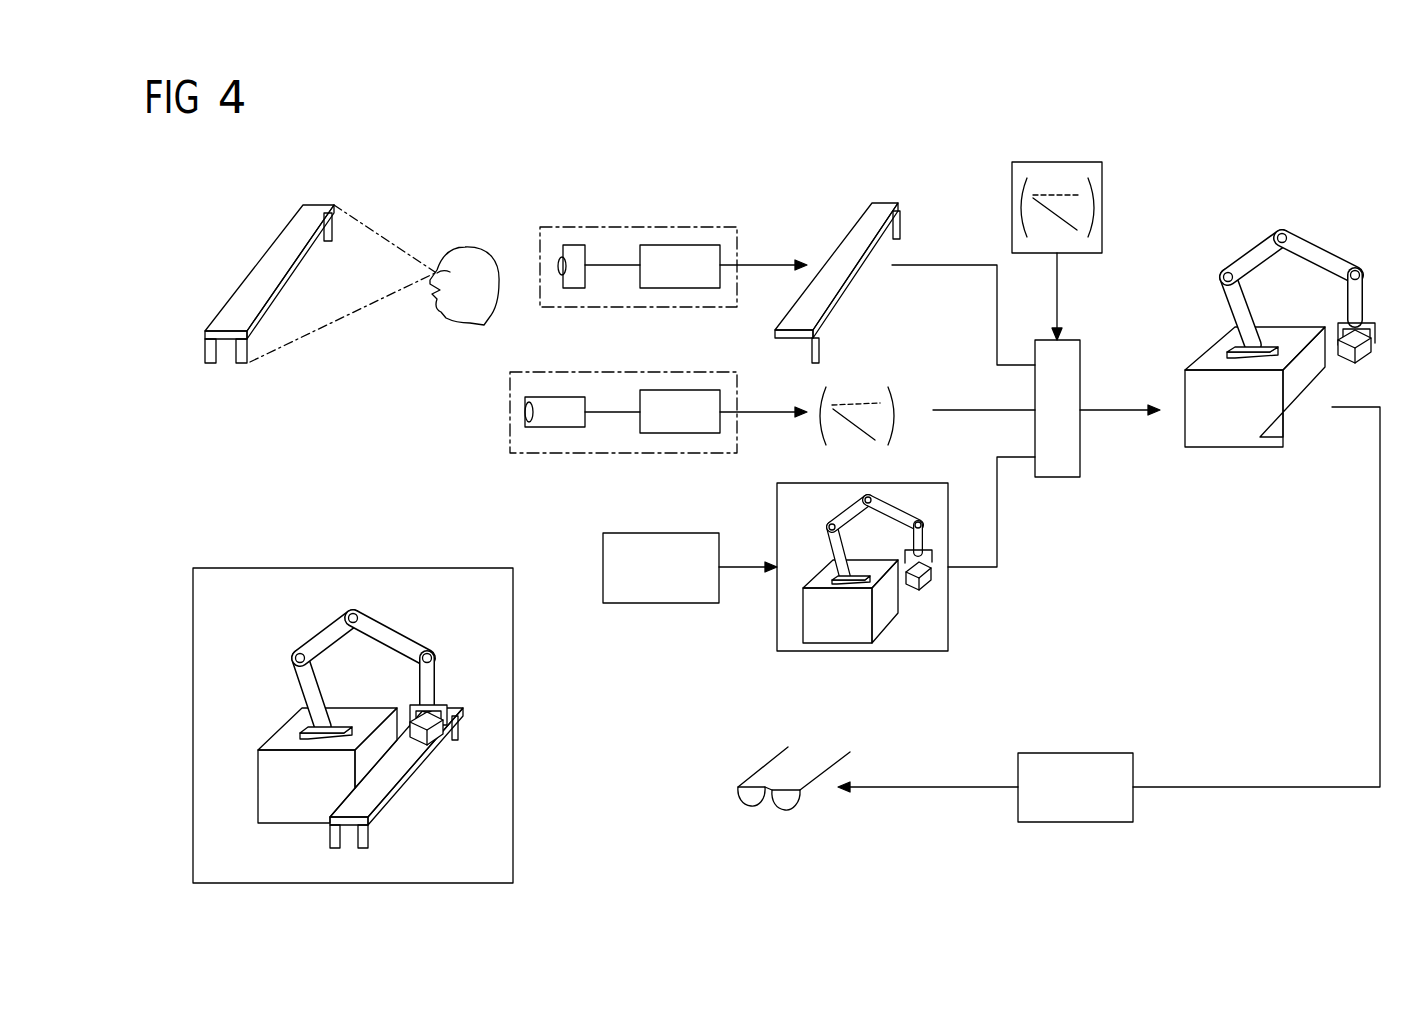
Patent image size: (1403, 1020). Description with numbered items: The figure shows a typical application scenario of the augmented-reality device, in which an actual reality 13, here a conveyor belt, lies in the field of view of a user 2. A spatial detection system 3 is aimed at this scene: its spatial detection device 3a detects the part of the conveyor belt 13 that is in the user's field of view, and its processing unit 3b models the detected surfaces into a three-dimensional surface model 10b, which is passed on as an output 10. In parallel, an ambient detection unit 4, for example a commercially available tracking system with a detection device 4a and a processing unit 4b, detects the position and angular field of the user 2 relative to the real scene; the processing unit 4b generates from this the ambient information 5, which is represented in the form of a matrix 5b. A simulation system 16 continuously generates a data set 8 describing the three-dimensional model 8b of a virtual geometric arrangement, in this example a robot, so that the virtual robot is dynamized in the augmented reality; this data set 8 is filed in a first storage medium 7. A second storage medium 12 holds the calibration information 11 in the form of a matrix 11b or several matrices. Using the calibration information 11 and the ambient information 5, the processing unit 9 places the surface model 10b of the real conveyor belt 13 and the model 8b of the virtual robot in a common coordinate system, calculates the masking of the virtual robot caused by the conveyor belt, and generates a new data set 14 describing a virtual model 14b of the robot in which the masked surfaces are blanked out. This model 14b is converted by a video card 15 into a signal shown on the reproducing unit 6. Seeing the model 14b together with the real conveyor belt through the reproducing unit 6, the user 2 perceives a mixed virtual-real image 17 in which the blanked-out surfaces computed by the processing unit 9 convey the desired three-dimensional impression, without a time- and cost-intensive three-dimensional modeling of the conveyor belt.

The user 2 is at (436, 325).
The spatial detection system 3 is at (633, 226).
The spatial detection device 3a is at (575, 250).
The processing unit of the spatial detection unit 3b is at (688, 250).
The ambient detection unit 4 is at (510, 423).
The detection device of the ambient detection unit 4a is at (572, 402).
The processing unit of the ambient detection unit 4b is at (690, 398).
The ambient information 5 is at (768, 410).
The matrix 5b is at (862, 385).
The reproducing unit 6 is at (730, 797).
The first storage medium 7 is at (949, 617).
The data set 8 is at (746, 573).
The 3D model of the virtual geometric arrangement 8b is at (833, 633).
The processing unit 9 is at (1067, 452).
The surface model signal 10 is at (768, 262).
The three-dimensional surface model 10b is at (883, 215).
The calibration information 11 is at (1059, 284).
The matrix 11b is at (1050, 176).
The second storage medium 12 is at (1104, 192).
The actual reality 13 is at (287, 247).
The new data set 14 is at (1122, 405).
The virtual model of the robot 14b is at (1330, 262).
The video card 15 is at (1075, 760).
The simulation system 16 is at (592, 524).
The mixed virtual real image 17 is at (377, 555).